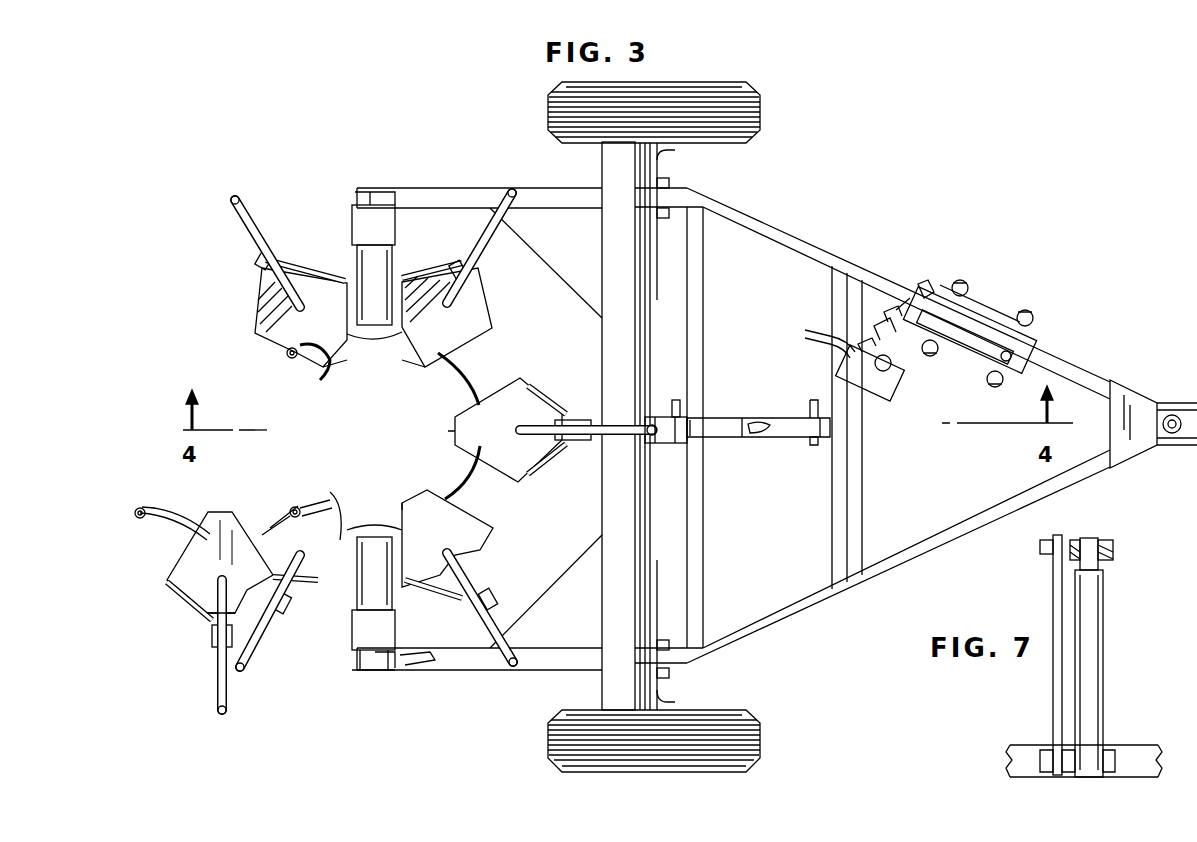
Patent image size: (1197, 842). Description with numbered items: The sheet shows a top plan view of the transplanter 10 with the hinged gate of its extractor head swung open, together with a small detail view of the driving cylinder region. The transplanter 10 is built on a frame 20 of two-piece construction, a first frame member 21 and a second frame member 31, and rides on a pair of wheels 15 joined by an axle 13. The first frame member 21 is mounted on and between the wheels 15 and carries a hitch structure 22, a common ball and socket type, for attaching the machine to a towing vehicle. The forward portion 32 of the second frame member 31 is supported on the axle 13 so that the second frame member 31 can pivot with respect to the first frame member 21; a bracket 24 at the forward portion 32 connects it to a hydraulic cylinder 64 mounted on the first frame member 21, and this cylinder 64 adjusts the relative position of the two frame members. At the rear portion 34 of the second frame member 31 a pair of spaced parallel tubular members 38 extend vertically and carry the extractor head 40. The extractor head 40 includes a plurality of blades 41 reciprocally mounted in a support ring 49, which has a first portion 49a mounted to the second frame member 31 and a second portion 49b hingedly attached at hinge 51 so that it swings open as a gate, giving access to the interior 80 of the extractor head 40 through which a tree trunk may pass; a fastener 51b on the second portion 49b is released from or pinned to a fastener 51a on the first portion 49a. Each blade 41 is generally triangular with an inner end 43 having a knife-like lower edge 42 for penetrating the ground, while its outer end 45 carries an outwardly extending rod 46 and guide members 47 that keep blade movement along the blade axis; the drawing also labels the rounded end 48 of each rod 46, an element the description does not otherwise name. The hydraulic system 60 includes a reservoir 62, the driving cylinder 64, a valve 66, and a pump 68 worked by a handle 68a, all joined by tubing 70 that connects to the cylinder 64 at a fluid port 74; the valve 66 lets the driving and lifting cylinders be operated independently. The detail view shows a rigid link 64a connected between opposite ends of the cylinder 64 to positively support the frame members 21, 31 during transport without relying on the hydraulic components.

In FIG. 3, the transplanter 10 is at (860, 226).
In FIG. 3, the axle 13 is at (602, 514).
In FIG. 3, the wheels 15 is at (760, 100).
In FIG. 3, the frame 20 is at (862, 588).
In FIG. 3, the first frame member 21 is at (922, 558).
In FIG. 7, the first frame member 21 is at (1130, 745).
In FIG. 3, the hitch structure 22 is at (1178, 405).
In FIG. 3, the bracket 24 is at (625, 442).
In FIG. 7, the bracket 24 is at (1105, 540).
In FIG. 3, the second frame member 31 is at (448, 190).
In FIG. 3, the forward portion of second frame member 32 is at (590, 190).
In FIG. 3, the rear portion of second frame member 34 is at (365, 670).
In FIG. 3, the tubular members 38 is at (352, 222).
In FIG. 3, the extractor head 40 is at (305, 362).
In FIG. 3, the blades 41 is at (282, 316).
In FIG. 3, the lower edge 42 is at (325, 368).
In FIG. 3, the inner end 43 is at (402, 335).
In FIG. 3, the outer end 45 is at (302, 282).
In FIG. 3, the rod 46 is at (255, 240).
In FIG. 3, the guide members 47 is at (262, 268).
In FIG. 3, the pin 48 is at (235, 195).
In FIG. 3, the support ring 49 is at (455, 385).
In FIG. 3, the first portion of support ring 49a is at (462, 450).
In FIG. 3, the second portion of support ring 49b is at (150, 532).
In FIG. 3, the hinge 51 is at (295, 505).
In FIG. 3, the fastener 51a is at (287, 354).
In FIG. 3, the fastener 51b is at (139, 508).
In FIG. 3, the hydraulic system 60 is at (998, 302).
In FIG. 3, the reservoir 62 is at (975, 356).
In FIG. 3, the hydraulic cylinder 64 is at (760, 438).
In FIG. 7, the hydraulic cylinder 64 is at (1103, 680).
In FIG. 7, the rigid link 64a is at (1053, 680).
In FIG. 3, the valve 66 is at (900, 375).
In FIG. 3, the pump 68 is at (922, 290).
In FIG. 3, the handle 68a is at (985, 328).
In FIG. 3, the tubing 70 is at (820, 350).
In FIG. 3, the fluid port 74 is at (745, 418).
In FIG. 3, the interior of extractor head 80 is at (272, 418).